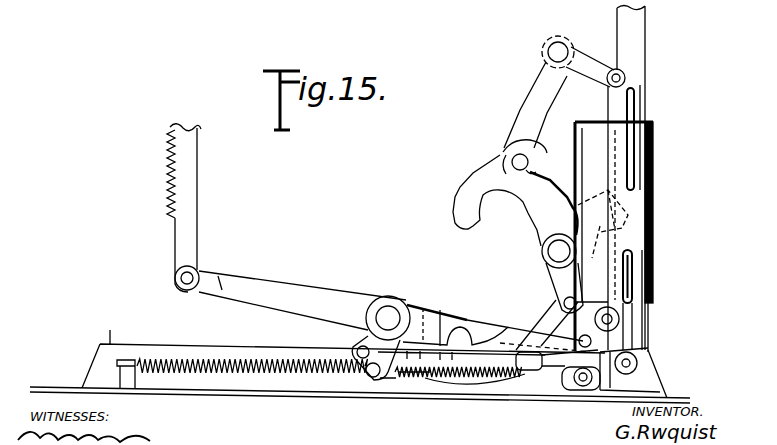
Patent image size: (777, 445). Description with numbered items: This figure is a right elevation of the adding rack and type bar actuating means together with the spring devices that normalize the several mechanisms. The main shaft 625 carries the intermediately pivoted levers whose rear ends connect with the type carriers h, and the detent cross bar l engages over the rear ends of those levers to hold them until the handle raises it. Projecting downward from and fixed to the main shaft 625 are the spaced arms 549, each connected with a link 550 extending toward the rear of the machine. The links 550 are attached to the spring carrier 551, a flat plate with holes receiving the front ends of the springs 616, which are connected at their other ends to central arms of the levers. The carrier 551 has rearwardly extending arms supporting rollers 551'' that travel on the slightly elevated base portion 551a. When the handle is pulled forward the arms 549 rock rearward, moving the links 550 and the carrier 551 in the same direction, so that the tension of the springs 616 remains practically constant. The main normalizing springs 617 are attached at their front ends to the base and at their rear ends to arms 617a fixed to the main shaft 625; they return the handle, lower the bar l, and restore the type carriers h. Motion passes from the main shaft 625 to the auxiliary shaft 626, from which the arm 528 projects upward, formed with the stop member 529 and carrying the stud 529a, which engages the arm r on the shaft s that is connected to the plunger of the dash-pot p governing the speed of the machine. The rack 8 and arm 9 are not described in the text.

The rack 8 is at (197, 186).
The arm 9 is at (292, 299).
The main shaft 625 is at (397, 298).
The spaced arms 549 is at (358, 347).
The main normalizing springs 617 is at (259, 376).
The arms 617a is at (366, 374).
The springs 616 is at (407, 380).
The link 550 is at (432, 378).
The spring carrier 551 is at (557, 391).
The rollers 551'' is at (586, 401).
The elevated base portion 551a is at (645, 372).
The cross bar l is at (512, 318).
The auxiliary shaft 626 is at (548, 255).
The arm 528 is at (462, 197).
The stud 529a is at (512, 155).
The stop member 529 is at (630, 231).
The arm r is at (538, 92).
The shaft s is at (561, 50).
The type carriers h is at (642, 70).
The dash-pot p is at (653, 162).